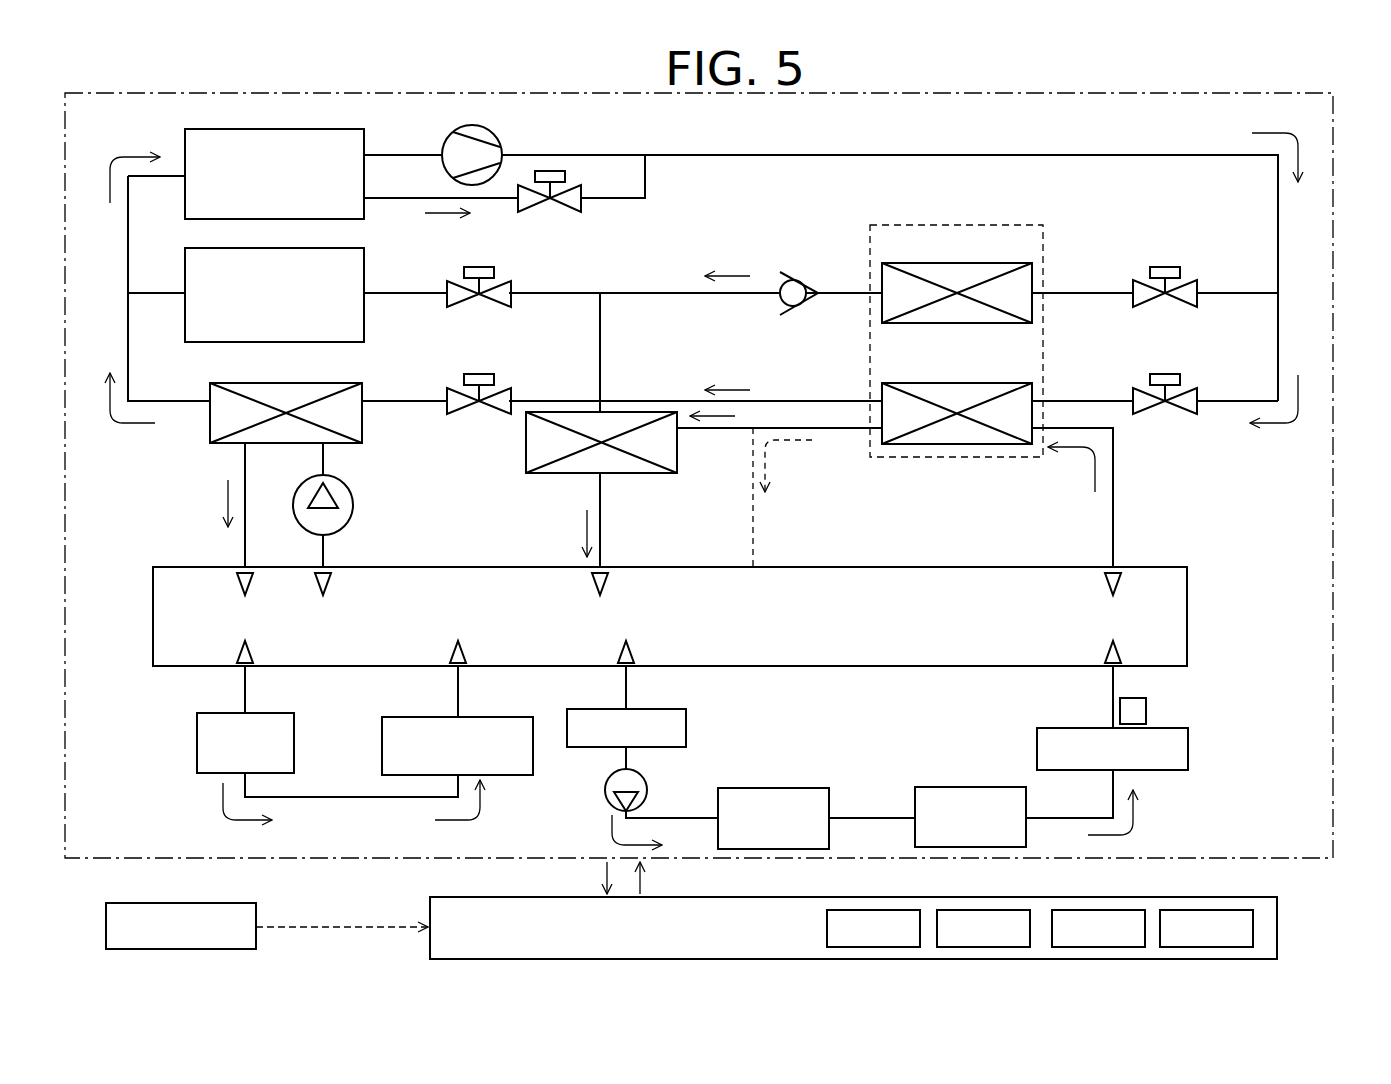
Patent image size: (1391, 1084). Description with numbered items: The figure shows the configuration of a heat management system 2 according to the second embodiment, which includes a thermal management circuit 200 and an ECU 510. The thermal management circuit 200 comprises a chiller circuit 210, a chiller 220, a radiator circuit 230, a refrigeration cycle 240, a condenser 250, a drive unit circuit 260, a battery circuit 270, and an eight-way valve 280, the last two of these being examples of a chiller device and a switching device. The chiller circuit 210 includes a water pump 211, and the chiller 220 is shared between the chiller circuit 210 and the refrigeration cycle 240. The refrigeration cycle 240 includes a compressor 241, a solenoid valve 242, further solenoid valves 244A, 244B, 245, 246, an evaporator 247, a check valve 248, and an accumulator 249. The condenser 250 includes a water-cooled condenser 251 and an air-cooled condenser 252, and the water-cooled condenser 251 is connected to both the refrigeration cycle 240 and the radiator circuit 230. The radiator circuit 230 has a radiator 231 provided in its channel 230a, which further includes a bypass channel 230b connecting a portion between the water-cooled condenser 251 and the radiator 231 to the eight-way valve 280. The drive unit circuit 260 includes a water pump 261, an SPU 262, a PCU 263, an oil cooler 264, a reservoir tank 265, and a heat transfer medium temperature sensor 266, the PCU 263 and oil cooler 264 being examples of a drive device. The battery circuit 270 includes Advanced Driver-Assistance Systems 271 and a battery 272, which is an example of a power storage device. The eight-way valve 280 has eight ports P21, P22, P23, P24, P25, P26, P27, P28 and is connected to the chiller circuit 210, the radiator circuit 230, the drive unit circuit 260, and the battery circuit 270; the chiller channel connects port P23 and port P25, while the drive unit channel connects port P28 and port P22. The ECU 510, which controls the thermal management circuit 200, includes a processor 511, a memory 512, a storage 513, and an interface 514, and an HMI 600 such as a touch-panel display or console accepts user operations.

The heat management system 2 is at (53, 133).
The thermal management circuit 200 is at (1335, 233).
The refrigeration cycle 240 is at (929, 153).
The compressor 241 is at (483, 128).
The solenoid valve 242 is at (566, 208).
The solenoid valve 244A is at (1175, 266).
The solenoid valve 244B is at (1175, 374).
The solenoid valve 245 is at (485, 266).
The solenoid valve 246 is at (485, 373).
The evaporator 247 is at (318, 247).
The check valve 248 is at (783, 274).
The accumulator 249 is at (318, 129).
The condenser 250 is at (968, 226).
The water-cooled condenser 251 is at (968, 384).
The air-cooled condenser 252 is at (968, 264).
The chiller 220 is at (318, 382).
The chiller circuit 210 is at (373, 486).
The water pump 211 is at (354, 506).
The radiator circuit 230 is at (546, 498).
The channel 230a is at (574, 502).
The bypass channel 230b is at (755, 520).
The radiator 231 is at (525, 447).
The eight-way valve 280 is at (808, 568).
The port P21 is at (237, 652).
The port P22 is at (1105, 652).
The port P23 is at (331, 582).
The port P24 is at (450, 652).
The port P25 is at (238, 582).
The port P26 is at (1121, 583).
The port P27 is at (607, 583).
The port P28 is at (618, 652).
The battery circuit 270 is at (476, 712).
The Advanced Driver-Assistance Systems 271 is at (270, 713).
The battery 272 is at (494, 718).
The drive unit circuit 260 is at (921, 753).
The water pump 261 is at (644, 778).
The SPU 262 is at (808, 788).
The PCU 263 is at (960, 787).
The oil cooler 264 is at (1163, 728).
The reservoir tank 265 is at (658, 709).
The heat transfer medium temperature sensor 266 is at (1138, 698).
The ECU 510 is at (1248, 897).
The processor 511 is at (910, 910).
The memory 512 is at (983, 910).
The storage 513 is at (1100, 910).
The interface 514 is at (1213, 910).
The HMI 600 is at (188, 903).